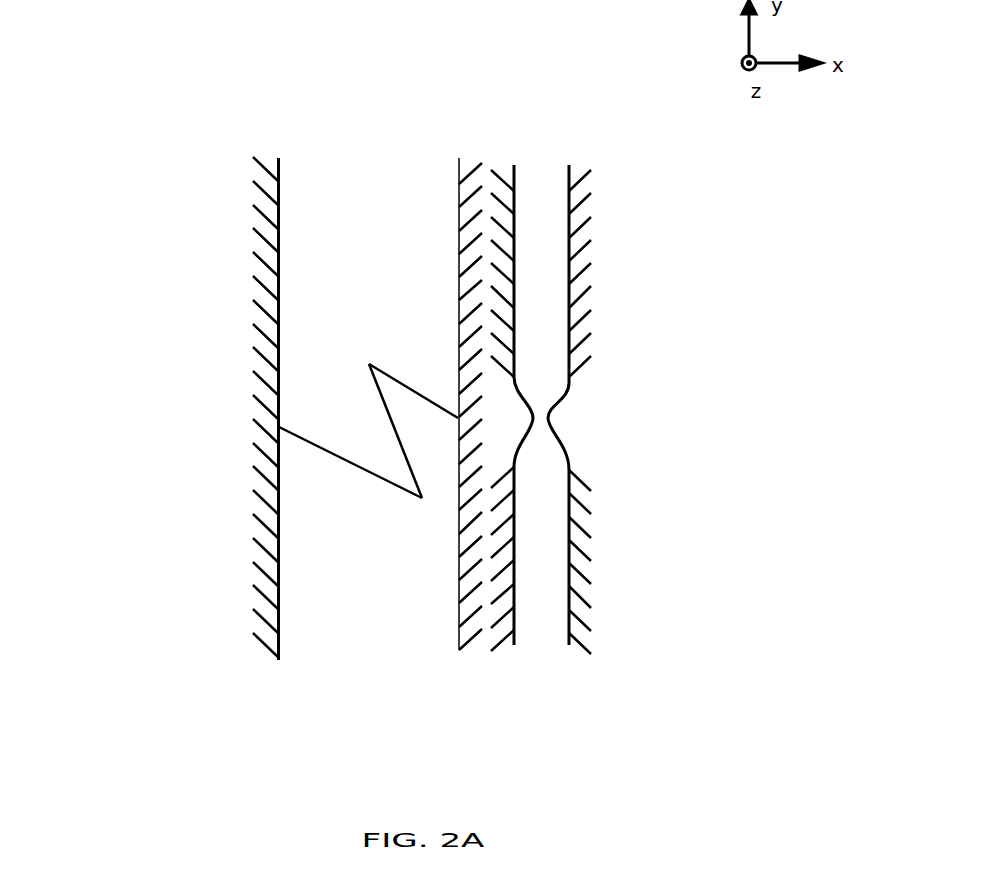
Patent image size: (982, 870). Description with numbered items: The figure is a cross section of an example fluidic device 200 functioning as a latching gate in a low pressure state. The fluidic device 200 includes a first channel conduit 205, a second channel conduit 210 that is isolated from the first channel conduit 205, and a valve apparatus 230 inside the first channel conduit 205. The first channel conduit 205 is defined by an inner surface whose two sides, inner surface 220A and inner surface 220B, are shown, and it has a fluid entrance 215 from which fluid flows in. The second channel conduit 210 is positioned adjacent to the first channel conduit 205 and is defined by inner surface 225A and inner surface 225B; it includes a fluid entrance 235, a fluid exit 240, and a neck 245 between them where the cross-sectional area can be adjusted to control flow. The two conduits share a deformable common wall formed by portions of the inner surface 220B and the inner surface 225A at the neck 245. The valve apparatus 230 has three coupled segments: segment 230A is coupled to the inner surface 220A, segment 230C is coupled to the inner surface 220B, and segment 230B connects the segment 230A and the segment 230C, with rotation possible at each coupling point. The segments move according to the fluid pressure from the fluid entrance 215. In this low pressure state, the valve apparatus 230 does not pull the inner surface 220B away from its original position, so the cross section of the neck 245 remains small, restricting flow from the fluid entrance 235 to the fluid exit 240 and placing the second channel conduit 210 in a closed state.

The fluidic device 200 is at (55, 21).
The first channel conduit 205 is at (297, 460).
The second channel conduit 210 is at (648, 337).
The fluid entrance 215 is at (378, 663).
The inner surface 220A is at (278, 276).
The inner surface 220B is at (400, 385).
The inner surface 225A is at (516, 165).
The inner surface 225B is at (570, 192).
The valve apparatus 230 is at (250, 438).
The segment 230A is at (395, 433).
The segment 230B is at (395, 432).
The segment 230C is at (397, 378).
The fluid entrance 235 is at (541, 165).
The fluid exit 240 is at (541, 650).
The neck 245 is at (548, 420).